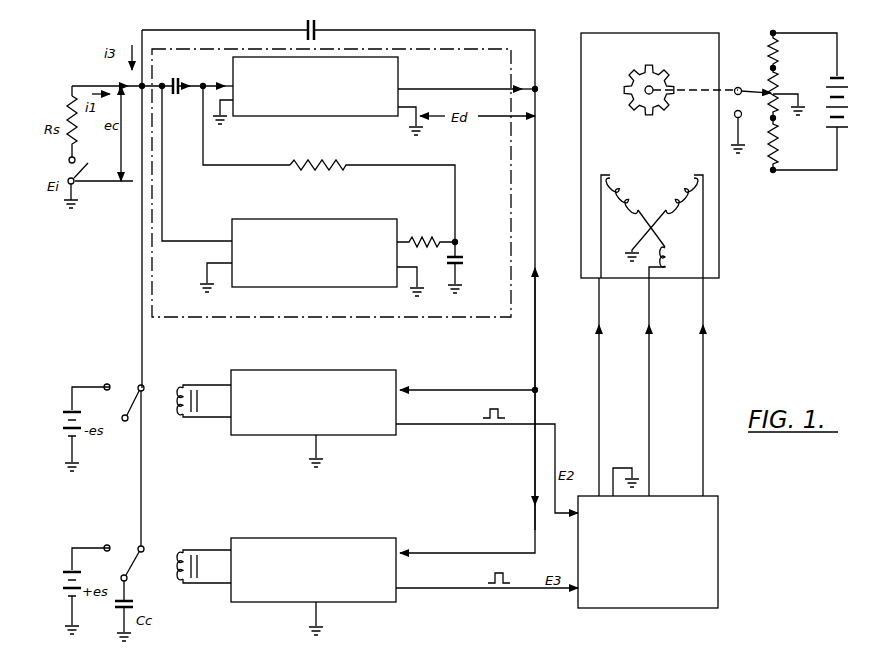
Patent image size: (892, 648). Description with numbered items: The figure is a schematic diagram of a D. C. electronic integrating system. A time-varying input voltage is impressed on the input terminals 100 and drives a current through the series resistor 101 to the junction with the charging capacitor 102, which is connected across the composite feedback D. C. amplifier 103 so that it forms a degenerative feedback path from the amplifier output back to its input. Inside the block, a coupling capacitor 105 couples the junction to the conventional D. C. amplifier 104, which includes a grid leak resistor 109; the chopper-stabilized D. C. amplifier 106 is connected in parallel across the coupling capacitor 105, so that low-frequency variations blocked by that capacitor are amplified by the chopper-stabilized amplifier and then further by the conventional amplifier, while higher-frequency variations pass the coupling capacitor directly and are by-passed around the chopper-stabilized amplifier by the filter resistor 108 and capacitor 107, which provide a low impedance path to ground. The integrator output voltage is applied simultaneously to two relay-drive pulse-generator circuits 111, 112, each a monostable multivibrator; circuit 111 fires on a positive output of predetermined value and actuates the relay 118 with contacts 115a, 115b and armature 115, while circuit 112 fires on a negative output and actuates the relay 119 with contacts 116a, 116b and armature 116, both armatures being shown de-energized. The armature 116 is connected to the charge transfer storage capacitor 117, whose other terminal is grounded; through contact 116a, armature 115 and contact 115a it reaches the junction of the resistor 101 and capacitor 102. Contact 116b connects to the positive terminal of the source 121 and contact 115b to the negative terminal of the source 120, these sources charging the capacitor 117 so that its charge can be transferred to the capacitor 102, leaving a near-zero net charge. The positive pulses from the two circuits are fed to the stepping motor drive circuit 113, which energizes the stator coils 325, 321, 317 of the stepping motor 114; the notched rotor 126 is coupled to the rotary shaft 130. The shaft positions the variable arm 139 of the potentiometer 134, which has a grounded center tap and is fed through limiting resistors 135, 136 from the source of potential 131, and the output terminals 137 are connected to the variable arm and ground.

The input terminals 100 is at (80, 166).
The resistor 101 is at (78, 135).
The charging capacitor 102 is at (316, 26).
The composite feedback D. C. amplifier 103 is at (482, 49).
The conventional D. C. amplifier 104 is at (378, 98).
The coupling capacitor 105 is at (178, 76).
The chopper-stabilized D. C. amplifier 106 is at (253, 275).
The capacitor 107 is at (460, 257).
The filter resistor 108 is at (410, 238).
The grid leak resistor 109 is at (318, 141).
The relay-drive pulse-generator circuit 111 is at (395, 375).
The relay-drive pulse-generator circuit 112 is at (383, 545).
The stepping motor drive circuit 113 is at (687, 597).
The stepping motor 114 is at (640, 33).
The armature 115 is at (134, 404).
The contact 115a is at (144, 386).
The contact 115b is at (120, 367).
The armature 116 is at (129, 567).
The contact 116a is at (144, 546).
The contact 116b is at (109, 545).
The capacitor 117 is at (137, 607).
The relay 118 is at (203, 410).
The relay 119 is at (205, 577).
The source 120 is at (70, 410).
The source 121 is at (70, 570).
The stepping motor rotor gear 126 is at (637, 81).
The rotary shaft 130 is at (697, 88).
The source of potential 131 is at (830, 74).
The potentiometer 134 is at (776, 96).
The limiting resistor 135 is at (775, 42).
The limiting resistor 136 is at (776, 130).
The output terminals 137 is at (734, 114).
The variable arm 139 is at (746, 89).
The stator coil 317 is at (672, 263).
The stator coil 321 is at (690, 203).
The stator coil 325 is at (620, 200).